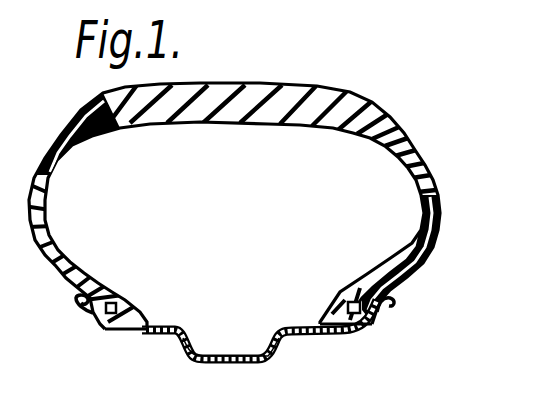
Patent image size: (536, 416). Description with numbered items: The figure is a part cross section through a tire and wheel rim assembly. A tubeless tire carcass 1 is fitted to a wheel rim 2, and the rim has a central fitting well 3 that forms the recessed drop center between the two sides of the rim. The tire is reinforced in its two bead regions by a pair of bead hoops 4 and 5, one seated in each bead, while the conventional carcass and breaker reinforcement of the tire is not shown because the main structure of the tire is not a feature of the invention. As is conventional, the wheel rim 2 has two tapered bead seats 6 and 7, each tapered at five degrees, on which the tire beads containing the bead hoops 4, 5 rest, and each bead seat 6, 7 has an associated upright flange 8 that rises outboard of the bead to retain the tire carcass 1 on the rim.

The tubeless tire carcass 1 is at (420, 164).
The wheel rim 2 is at (215, 368).
The central fitting well 3 is at (203, 343).
The bead hoop 4 is at (115, 303).
The bead hoop 5 is at (350, 304).
The tapered bead seat 6 is at (116, 338).
The tapered bead seat 7 is at (340, 334).
The upright flange 8 is at (88, 318).